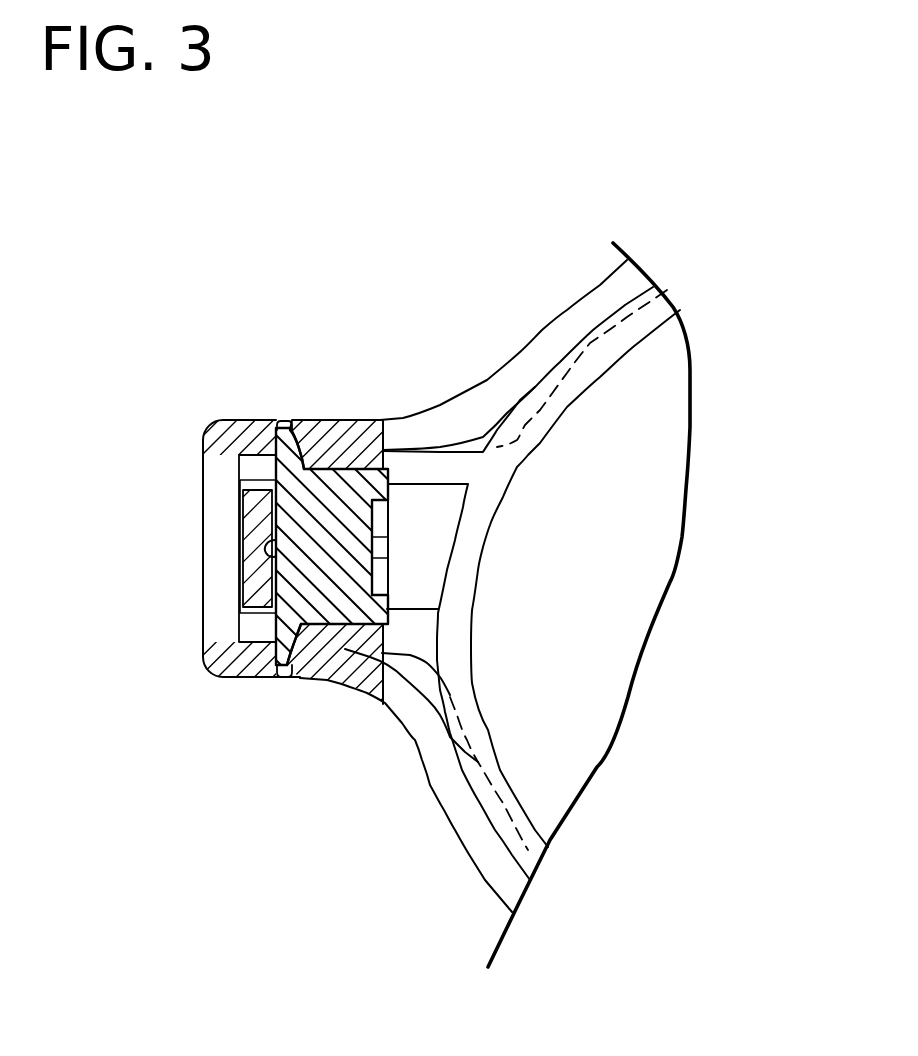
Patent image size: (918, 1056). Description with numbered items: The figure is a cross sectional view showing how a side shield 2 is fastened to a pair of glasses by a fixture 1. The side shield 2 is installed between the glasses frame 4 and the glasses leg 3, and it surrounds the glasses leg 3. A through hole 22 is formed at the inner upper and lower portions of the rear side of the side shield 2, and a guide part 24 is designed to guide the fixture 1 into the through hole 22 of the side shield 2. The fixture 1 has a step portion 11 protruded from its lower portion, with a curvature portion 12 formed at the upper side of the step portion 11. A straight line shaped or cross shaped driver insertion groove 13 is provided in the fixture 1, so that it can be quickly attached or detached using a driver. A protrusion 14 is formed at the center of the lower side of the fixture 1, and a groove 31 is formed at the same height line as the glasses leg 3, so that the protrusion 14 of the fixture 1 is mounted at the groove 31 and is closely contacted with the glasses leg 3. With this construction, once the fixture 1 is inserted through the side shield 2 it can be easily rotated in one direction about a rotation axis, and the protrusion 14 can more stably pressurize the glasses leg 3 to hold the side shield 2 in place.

The fixture 1 is at (388, 507).
The side shield 2 is at (213, 635).
The glasses leg 3 is at (240, 540).
The glasses frame 4 is at (690, 313).
The step portion 11 is at (283, 420).
The curvature portion 12 is at (328, 437).
The driver insertion groove 13 is at (387, 576).
The protrusion 14 is at (266, 545).
The through hole 22 is at (297, 422).
The guide part 24 is at (413, 411).
The groove 31 is at (270, 553).